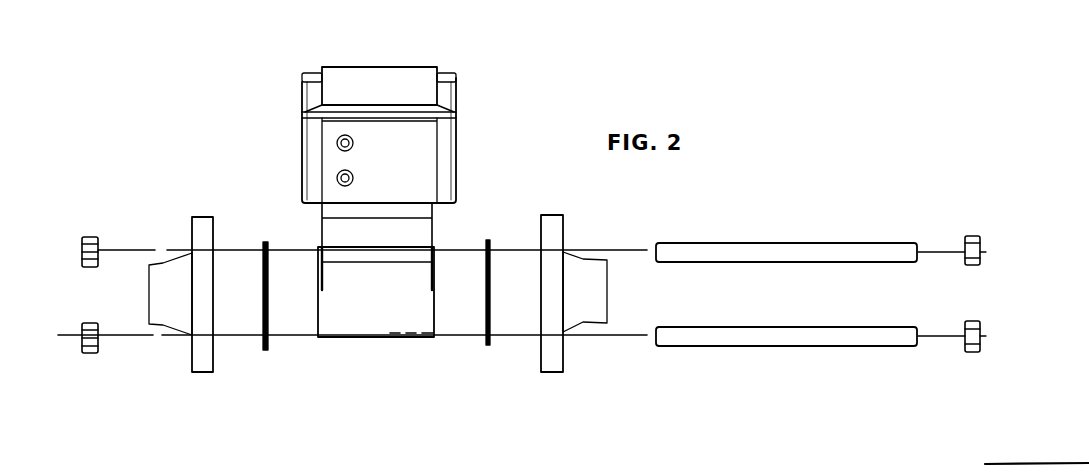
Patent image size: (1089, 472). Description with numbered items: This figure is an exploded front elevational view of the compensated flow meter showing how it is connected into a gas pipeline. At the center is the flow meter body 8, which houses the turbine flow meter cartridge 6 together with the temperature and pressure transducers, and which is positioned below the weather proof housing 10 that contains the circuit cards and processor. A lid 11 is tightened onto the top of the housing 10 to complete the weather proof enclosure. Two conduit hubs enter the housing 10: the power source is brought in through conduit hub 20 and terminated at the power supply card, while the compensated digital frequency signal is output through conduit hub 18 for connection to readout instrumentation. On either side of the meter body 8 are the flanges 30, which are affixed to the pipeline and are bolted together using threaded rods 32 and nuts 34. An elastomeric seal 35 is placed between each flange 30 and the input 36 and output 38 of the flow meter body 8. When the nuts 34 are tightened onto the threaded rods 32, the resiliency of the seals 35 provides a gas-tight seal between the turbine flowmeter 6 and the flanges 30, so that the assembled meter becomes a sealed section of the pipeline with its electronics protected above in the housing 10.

The turbine flow meter cartridge 6 is at (410, 348).
The flow meter 8 is at (378, 228).
The weather proof housing 10 is at (456, 148).
The lid 11 is at (405, 67).
The conduit hub 18 is at (335, 143).
The conduit hub 20 is at (335, 178).
The flange 30 is at (213, 372).
The threaded rod 32 is at (722, 262).
The nut 34 is at (80, 250).
The elastomeric seal 35 is at (267, 241).
The input 36 is at (438, 308).
The output 38 is at (317, 317).